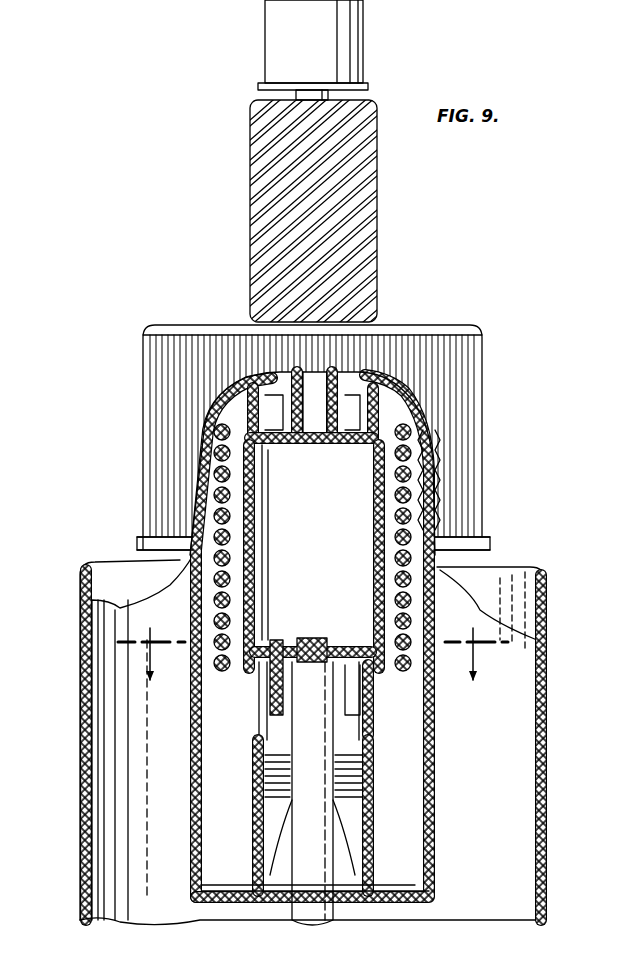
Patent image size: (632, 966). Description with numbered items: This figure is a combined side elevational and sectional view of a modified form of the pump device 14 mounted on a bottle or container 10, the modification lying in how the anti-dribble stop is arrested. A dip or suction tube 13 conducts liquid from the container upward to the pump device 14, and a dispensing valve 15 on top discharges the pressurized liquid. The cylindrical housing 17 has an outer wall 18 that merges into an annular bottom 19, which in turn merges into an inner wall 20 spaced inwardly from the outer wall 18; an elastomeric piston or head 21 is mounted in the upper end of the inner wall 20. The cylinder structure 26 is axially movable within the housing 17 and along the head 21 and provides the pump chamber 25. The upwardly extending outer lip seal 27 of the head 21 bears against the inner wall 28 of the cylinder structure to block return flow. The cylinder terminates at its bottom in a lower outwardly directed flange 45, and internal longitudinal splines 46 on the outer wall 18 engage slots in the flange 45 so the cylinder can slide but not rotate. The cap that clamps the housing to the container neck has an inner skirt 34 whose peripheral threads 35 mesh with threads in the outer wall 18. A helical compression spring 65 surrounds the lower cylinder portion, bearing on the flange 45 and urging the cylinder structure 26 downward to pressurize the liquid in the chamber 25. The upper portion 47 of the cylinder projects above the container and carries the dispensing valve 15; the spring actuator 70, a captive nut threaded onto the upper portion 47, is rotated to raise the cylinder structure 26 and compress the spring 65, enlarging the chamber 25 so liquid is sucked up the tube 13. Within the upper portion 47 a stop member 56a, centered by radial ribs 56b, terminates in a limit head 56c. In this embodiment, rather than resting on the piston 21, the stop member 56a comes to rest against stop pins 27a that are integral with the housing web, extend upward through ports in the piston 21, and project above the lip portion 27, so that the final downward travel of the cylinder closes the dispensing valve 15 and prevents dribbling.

The dip or suction tube 13 is at (300, 903).
The pump device 14 is at (150, 850).
The dispensing valve 15 is at (262, 40).
The cylindrical housing 17 is at (437, 783).
The outer wall 18 is at (195, 772).
The annular bottom 19 is at (392, 903).
The inner wall 20 is at (367, 822).
The piston or head 21 is at (337, 638).
The pump chamber 25 is at (330, 492).
The cylinder structure 26 is at (232, 440).
The outer lip seal 27 is at (377, 650).
The stop pins 27a is at (267, 710).
The inner wall of the piston structure 28 is at (215, 515).
The inner skirt 34 is at (433, 477).
The peripheral threads 35 is at (433, 467).
The lower outwardly directed flange 45 is at (405, 675).
The internal longitudinal splines 46 is at (420, 877).
The upper portion 47 is at (275, 222).
The stop member 56a is at (343, 380).
The radial ribs 56b is at (262, 378).
The limit head 56c is at (373, 437).
The helical compression spring 65 is at (190, 575).
The spring actuator 70 is at (482, 358).
The bottle or container 10 is at (313, 672).